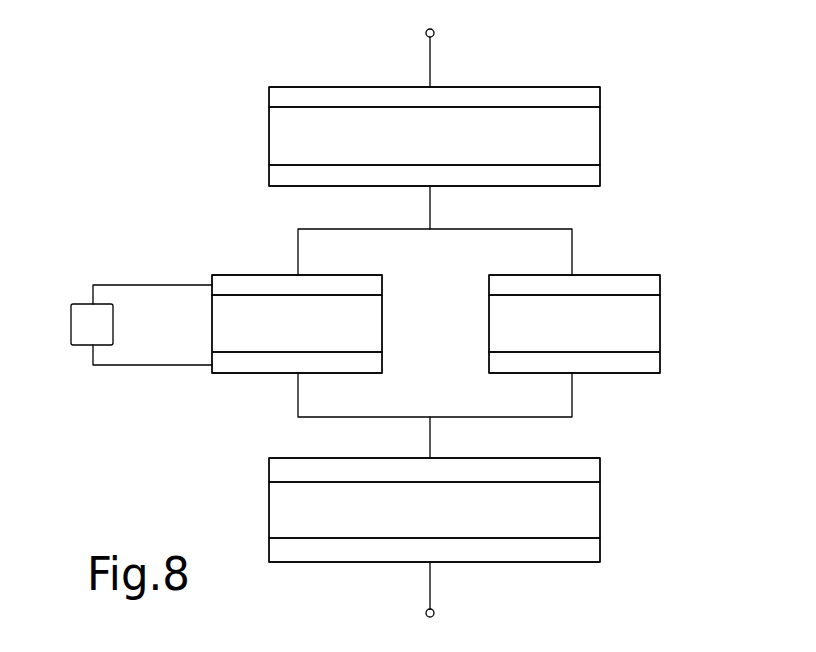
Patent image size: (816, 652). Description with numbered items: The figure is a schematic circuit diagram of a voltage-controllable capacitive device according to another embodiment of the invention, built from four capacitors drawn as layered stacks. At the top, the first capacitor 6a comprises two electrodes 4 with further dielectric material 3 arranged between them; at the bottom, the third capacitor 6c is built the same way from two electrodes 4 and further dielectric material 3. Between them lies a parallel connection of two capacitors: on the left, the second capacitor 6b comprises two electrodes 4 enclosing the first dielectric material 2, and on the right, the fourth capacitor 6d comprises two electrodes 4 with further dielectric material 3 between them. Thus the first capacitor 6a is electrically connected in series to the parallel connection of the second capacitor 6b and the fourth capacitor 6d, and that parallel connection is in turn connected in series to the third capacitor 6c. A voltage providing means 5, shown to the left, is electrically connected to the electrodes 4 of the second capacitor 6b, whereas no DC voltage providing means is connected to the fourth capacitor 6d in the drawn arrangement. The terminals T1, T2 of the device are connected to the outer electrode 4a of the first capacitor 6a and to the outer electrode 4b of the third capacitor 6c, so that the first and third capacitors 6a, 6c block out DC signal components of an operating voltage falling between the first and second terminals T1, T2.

The first dielectric material 2 is at (370, 322).
The further dielectric material 3 is at (585, 131).
The electrodes 4 is at (590, 174).
The outer electrode of the first capacitor 4a is at (585, 96).
The outer electrode of the third capacitor 4b is at (585, 546).
The voltage providing means 5 is at (75, 323).
The first capacitor 6a is at (269, 87).
The second capacitor 6b is at (212, 275).
The third capacitor 6c is at (269, 458).
The fourth capacitor 6d is at (632, 273).
The first terminal T1 is at (434, 35).
The second terminal T2 is at (434, 611).